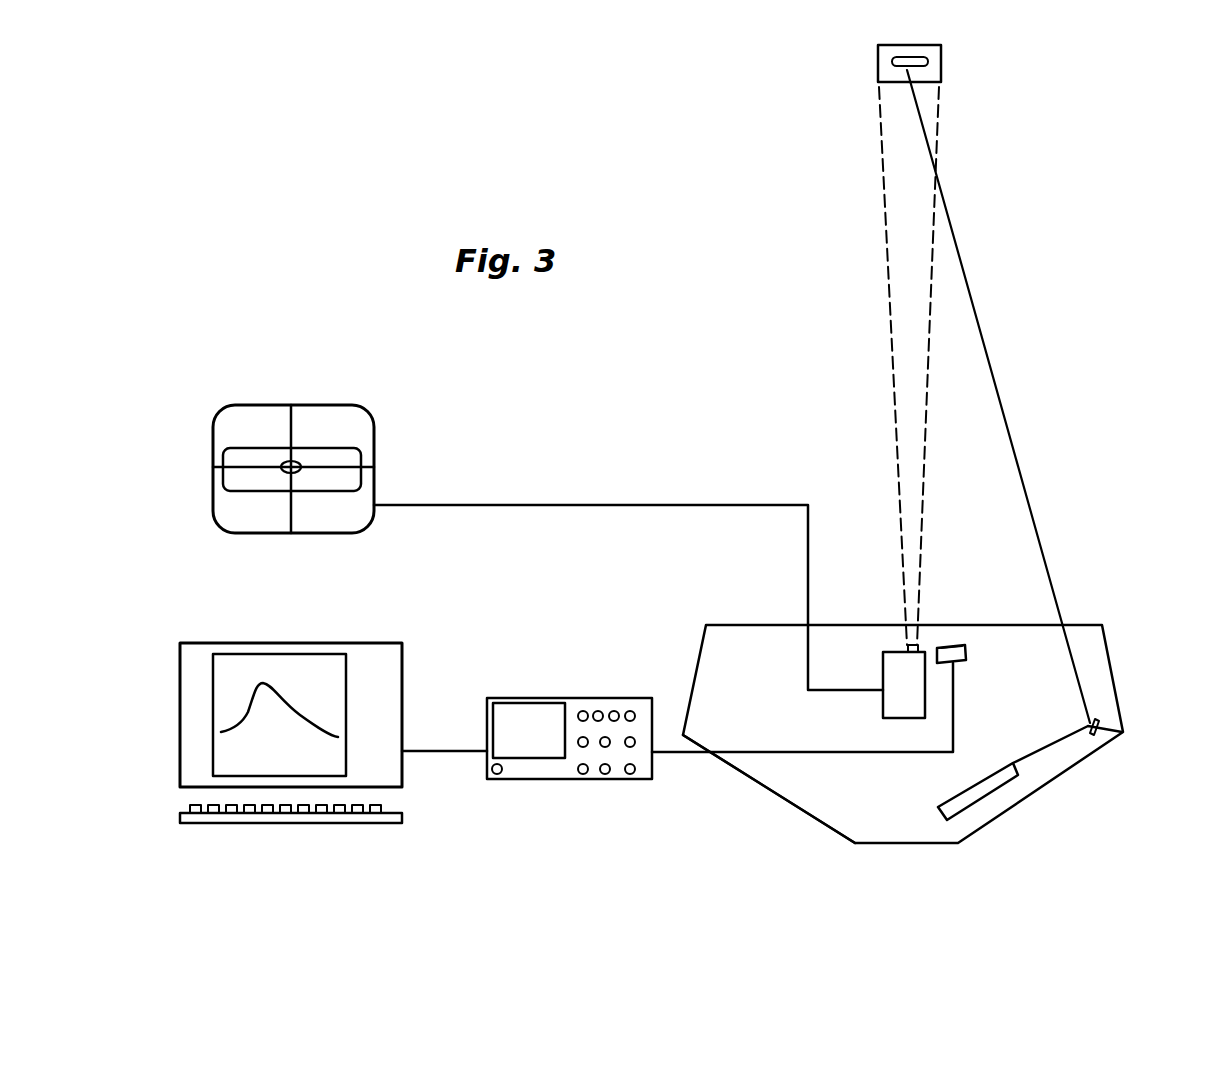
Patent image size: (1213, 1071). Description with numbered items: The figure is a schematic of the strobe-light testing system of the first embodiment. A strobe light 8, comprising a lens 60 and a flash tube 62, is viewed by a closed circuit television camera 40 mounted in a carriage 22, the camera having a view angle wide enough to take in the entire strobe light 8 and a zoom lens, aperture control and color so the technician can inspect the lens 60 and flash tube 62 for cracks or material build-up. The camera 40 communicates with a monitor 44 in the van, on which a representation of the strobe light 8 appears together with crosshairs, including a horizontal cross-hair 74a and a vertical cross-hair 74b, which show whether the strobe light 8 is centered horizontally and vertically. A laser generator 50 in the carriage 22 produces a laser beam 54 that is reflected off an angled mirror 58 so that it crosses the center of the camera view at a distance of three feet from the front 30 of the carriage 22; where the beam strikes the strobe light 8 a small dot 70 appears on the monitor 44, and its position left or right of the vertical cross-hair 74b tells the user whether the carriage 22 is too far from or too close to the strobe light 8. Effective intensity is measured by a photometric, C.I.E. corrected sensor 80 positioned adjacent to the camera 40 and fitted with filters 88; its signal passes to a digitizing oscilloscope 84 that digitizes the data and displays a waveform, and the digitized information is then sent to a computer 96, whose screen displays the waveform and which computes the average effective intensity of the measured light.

The strobe light 8 is at (915, 45).
The flash tube 62 is at (928, 62).
The lens 60 is at (878, 76).
The laser beam 54 is at (1018, 465).
The front 30 is at (1035, 625).
The carriage 22 is at (808, 800).
The closed circuit television camera 40 is at (883, 660).
The photometric sensor 80 is at (966, 640).
The filters 88 is at (950, 647).
The mirror 58 is at (1107, 730).
The laser generator 50 is at (993, 792).
The monitor 44 is at (374, 420).
The horizontal cross-hair 74a is at (213, 467).
The vertical cross-hair 74b is at (292, 520).
The dot 70 is at (283, 472).
The computer 96 is at (192, 727).
The digitizing oscilloscope 84 is at (615, 773).